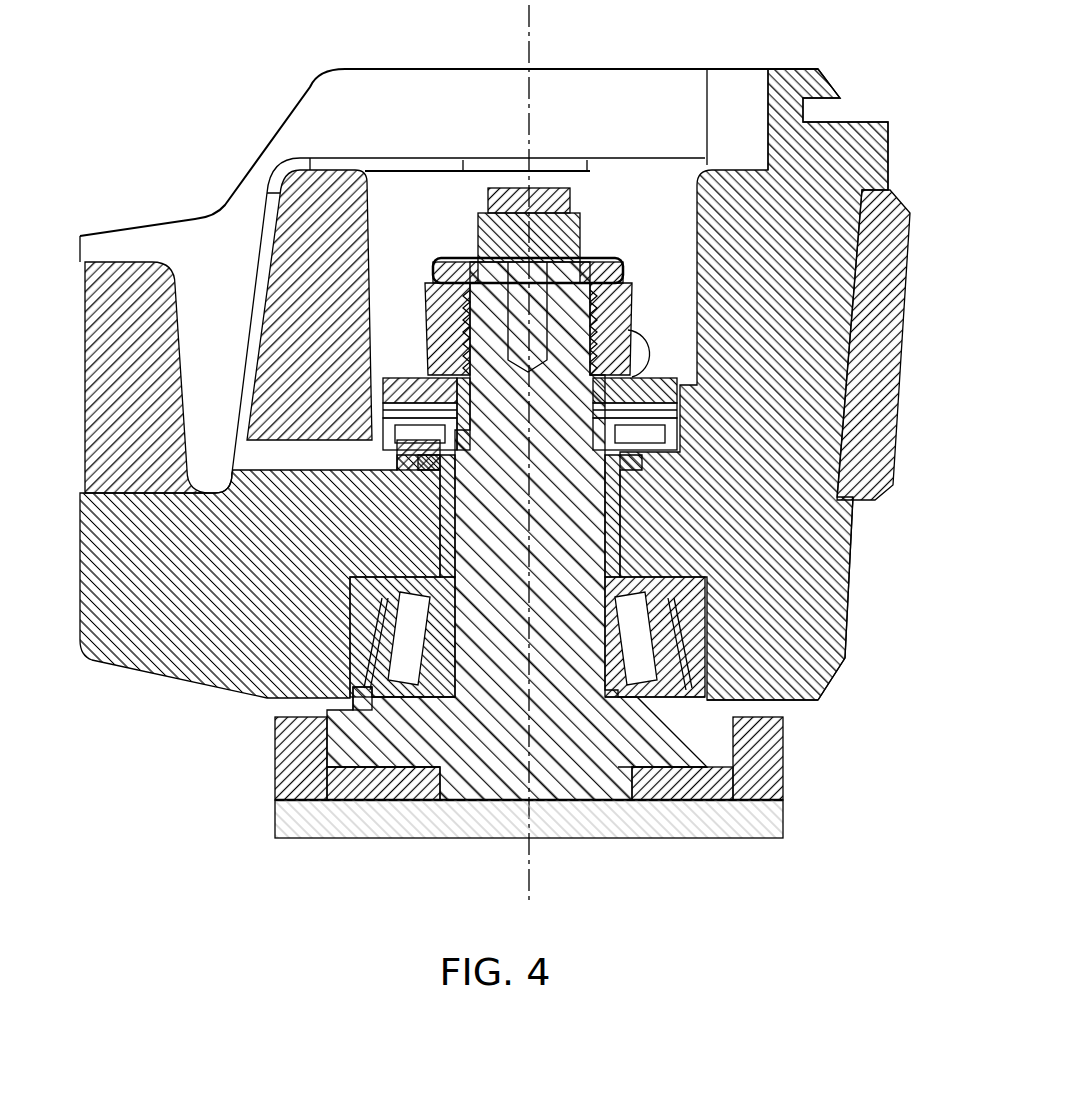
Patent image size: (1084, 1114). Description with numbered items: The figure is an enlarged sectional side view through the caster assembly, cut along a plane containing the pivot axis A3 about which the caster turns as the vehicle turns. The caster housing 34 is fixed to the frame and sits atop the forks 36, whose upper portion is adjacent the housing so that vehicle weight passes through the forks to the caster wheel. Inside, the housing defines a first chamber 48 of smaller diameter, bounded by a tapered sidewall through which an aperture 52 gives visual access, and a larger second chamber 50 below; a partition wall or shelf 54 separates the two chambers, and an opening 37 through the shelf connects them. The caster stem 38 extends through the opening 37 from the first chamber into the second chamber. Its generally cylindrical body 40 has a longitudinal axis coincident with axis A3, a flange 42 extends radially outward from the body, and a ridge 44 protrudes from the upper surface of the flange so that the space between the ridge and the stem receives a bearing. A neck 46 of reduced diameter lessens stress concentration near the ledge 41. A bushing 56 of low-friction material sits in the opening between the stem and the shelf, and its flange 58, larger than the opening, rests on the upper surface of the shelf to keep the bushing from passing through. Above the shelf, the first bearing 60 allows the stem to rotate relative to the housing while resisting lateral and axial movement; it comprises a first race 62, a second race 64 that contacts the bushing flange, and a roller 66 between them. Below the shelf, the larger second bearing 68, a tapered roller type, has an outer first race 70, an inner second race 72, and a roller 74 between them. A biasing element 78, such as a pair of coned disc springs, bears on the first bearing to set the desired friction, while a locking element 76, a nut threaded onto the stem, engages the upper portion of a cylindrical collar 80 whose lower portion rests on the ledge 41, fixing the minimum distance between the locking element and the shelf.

The axis A3 is at (538, 42).
The caster housing 34 is at (240, 210).
The forks 36 is at (295, 840).
The opening 37 is at (842, 620).
The caster stem 38 is at (547, 700).
The body 40 is at (552, 625).
The ledge 41 is at (848, 548).
The flange 42 is at (352, 760).
The ridge 44 is at (380, 705).
The neck 46 is at (615, 440).
The first chamber 48 is at (655, 217).
The second chamber 50 is at (705, 705).
The aperture 52 is at (243, 457).
The shelf 54 is at (440, 550).
The bushing 56 is at (845, 583).
The flange 58 is at (850, 508).
The first bearing 60 is at (395, 448).
The first race 62 is at (372, 432).
The second race 64 is at (428, 497).
The roller 66 is at (385, 418).
The second bearing 68 is at (300, 742).
The first race 70 is at (360, 690).
The second race 72 is at (443, 700).
The roller 74 is at (415, 727).
The locking element 76 is at (622, 300).
The biasing element 78 is at (642, 385).
The collar 80 is at (405, 506).